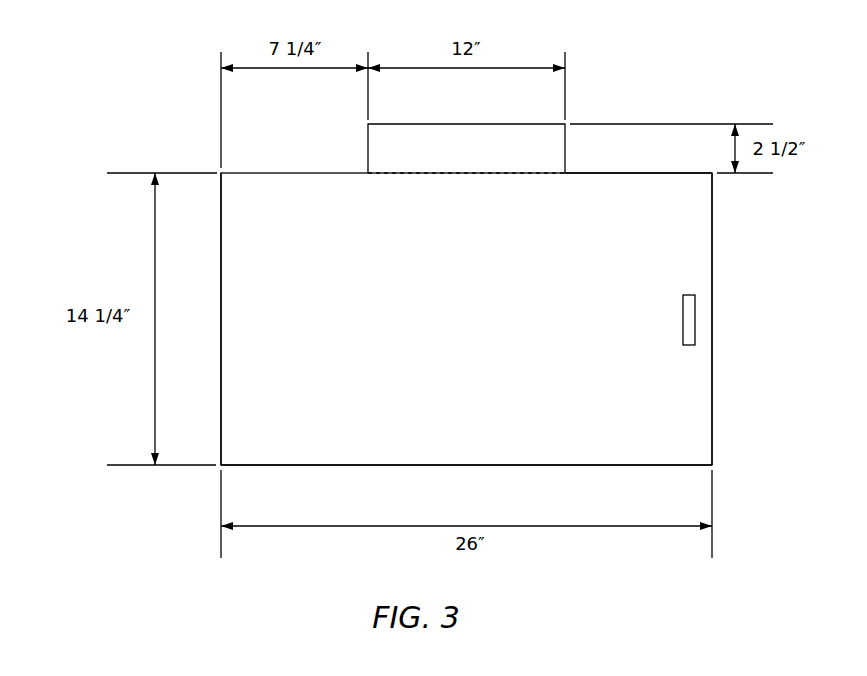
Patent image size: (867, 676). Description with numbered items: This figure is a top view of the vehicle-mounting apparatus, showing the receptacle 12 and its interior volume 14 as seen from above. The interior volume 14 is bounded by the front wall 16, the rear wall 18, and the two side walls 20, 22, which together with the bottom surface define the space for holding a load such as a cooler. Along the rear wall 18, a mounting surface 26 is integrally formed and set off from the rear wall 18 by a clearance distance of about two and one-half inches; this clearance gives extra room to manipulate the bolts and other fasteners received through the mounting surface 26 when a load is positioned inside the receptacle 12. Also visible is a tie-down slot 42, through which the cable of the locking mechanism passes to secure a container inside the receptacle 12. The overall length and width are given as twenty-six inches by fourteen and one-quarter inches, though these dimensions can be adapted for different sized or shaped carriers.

The receptacle 12 is at (713, 378).
The interior volume 14 is at (478, 331).
The front wall 16 is at (570, 467).
The rear wall 18 is at (632, 173).
The side wall 20 is at (713, 258).
The side wall 22 is at (219, 310).
The mounting surface 26 is at (463, 124).
The tie-down slot 42 is at (688, 335).